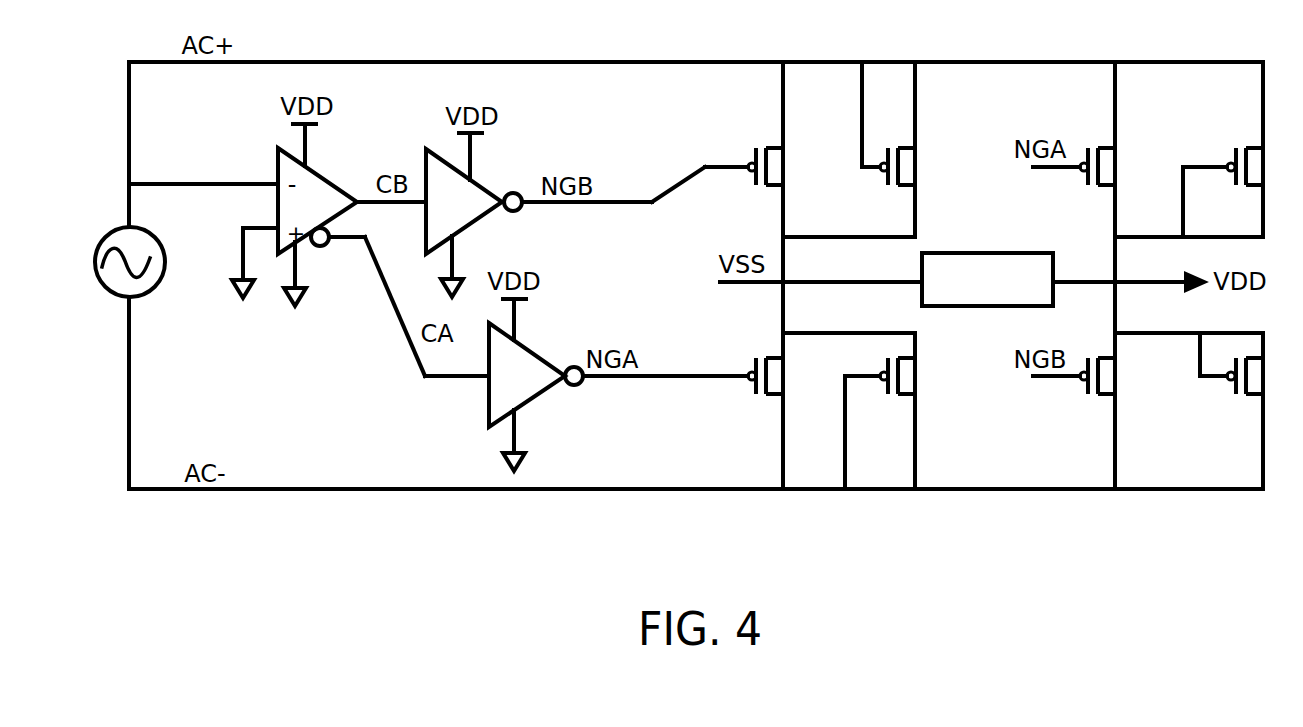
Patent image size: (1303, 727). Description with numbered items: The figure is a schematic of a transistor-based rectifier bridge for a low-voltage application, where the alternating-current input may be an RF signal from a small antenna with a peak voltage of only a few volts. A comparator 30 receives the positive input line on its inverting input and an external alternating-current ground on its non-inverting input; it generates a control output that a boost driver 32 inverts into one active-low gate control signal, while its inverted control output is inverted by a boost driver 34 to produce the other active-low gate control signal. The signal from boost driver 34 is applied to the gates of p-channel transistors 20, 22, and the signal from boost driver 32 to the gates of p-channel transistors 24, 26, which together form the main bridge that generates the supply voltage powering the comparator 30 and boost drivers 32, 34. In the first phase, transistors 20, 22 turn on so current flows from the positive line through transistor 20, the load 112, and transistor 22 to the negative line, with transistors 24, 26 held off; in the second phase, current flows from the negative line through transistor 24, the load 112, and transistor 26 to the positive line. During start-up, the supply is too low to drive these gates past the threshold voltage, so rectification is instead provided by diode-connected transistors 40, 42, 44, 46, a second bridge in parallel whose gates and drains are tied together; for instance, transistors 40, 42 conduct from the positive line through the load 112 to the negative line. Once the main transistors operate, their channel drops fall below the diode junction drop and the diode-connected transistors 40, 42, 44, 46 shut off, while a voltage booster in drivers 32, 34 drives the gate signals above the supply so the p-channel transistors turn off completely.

The comparator 30 is at (333, 182).
The boost driver 32 is at (435, 216).
The boost driver 34 is at (498, 390).
The p-channel transistor 20 is at (1095, 180).
The p-channel transistor 22 is at (763, 389).
The p-channel transistor 24 is at (1095, 389).
The p-channel transistor 26 is at (763, 180).
The diode-connected transistor 40 is at (1243, 180).
The diode-connected transistor 42 is at (895, 389).
The diode-connected transistor 44 is at (1243, 389).
The diode-connected transistor 46 is at (895, 180).
The load 112 is at (968, 294).